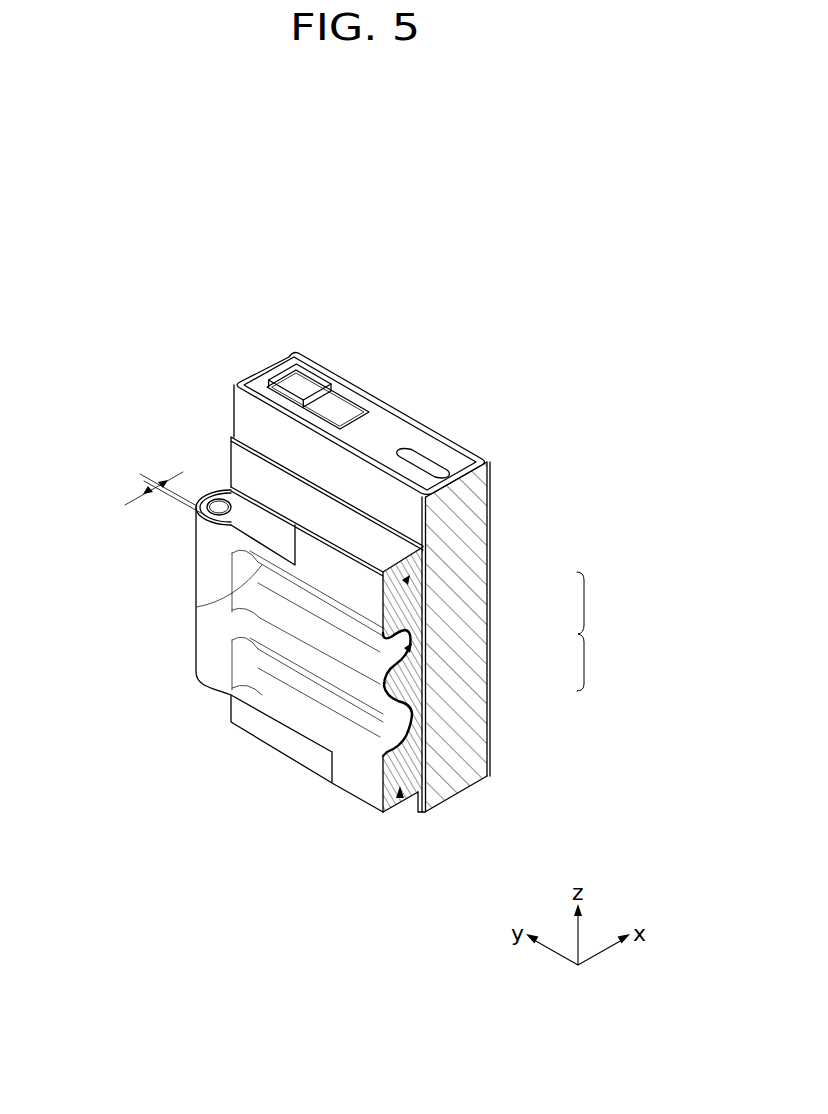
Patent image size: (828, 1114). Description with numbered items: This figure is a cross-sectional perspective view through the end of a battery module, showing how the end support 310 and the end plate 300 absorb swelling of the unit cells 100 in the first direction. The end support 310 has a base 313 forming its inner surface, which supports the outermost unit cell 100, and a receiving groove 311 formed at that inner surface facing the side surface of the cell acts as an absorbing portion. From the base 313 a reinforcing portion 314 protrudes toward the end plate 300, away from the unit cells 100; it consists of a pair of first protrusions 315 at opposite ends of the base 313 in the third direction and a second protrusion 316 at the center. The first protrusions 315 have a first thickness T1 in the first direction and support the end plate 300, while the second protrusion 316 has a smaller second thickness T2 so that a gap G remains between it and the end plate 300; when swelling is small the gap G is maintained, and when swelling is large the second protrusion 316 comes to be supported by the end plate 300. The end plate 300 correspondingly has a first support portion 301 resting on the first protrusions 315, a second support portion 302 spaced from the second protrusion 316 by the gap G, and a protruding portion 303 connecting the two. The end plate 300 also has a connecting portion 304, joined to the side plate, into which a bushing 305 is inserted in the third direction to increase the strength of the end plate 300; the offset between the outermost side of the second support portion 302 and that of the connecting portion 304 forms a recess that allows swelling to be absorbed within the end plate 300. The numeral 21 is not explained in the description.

The connector box 21 is at (292, 370).
The unit cell 100 is at (468, 727).
The end plate 300 is at (197, 639).
The first support portion 301 is at (341, 575).
The second support portion 302 is at (304, 653).
The protruding portion 303 is at (250, 597).
The connecting portion 304 is at (240, 571).
The bushing 305 is at (212, 491).
The end support 310 is at (400, 796).
The receiving groove 311 is at (440, 762).
The base 313 is at (423, 814).
The reinforcing portion 314 is at (508, 679).
The first protrusions 315 is at (422, 597).
The second protrusion 316 is at (418, 695).
The first thickness T1 is at (410, 575).
The second thickness T2 is at (412, 648).
The gap G is at (380, 703).